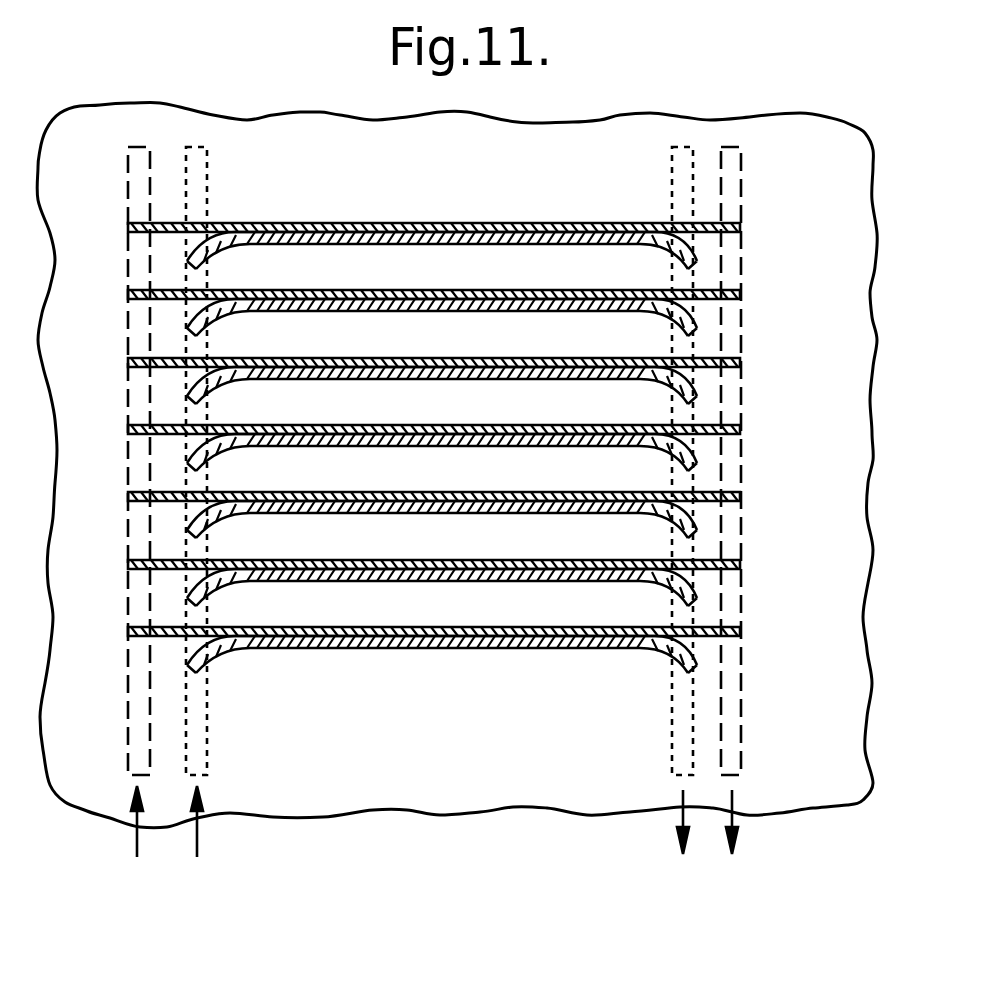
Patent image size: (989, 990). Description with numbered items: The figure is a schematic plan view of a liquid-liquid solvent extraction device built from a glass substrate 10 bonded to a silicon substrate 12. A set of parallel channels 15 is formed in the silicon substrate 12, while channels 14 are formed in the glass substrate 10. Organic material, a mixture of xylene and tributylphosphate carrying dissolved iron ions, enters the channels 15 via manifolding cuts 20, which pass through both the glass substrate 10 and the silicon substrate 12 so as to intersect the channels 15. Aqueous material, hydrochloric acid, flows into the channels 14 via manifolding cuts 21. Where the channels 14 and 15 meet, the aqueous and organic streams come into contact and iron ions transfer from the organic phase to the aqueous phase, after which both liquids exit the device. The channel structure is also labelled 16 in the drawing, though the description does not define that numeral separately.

The glass substrate 10 is at (462, 488).
The silicon substrate 12 is at (823, 783).
The channels 14 is at (692, 264).
The channels 15 is at (747, 237).
The flow channel tube 16 is at (476, 418).
The manifolding cuts 20 is at (737, 150).
The manifolding cuts 21 is at (680, 715).